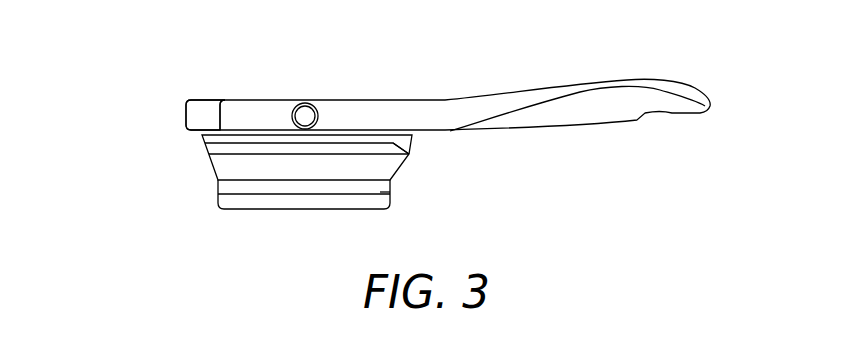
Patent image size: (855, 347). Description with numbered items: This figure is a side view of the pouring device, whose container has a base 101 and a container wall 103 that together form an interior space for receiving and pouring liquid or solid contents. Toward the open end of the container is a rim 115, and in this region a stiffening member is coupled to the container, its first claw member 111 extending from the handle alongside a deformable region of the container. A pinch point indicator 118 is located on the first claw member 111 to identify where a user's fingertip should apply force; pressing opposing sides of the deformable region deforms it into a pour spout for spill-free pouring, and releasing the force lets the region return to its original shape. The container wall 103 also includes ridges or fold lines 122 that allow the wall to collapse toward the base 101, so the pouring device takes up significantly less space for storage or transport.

The base 101 is at (305, 210).
The container wall 103 is at (228, 164).
The first claw member 111 is at (230, 115).
The rim 115 is at (240, 100).
The pinch point indicators 118 is at (303, 113).
The ridges or fold lines 122 is at (385, 154).